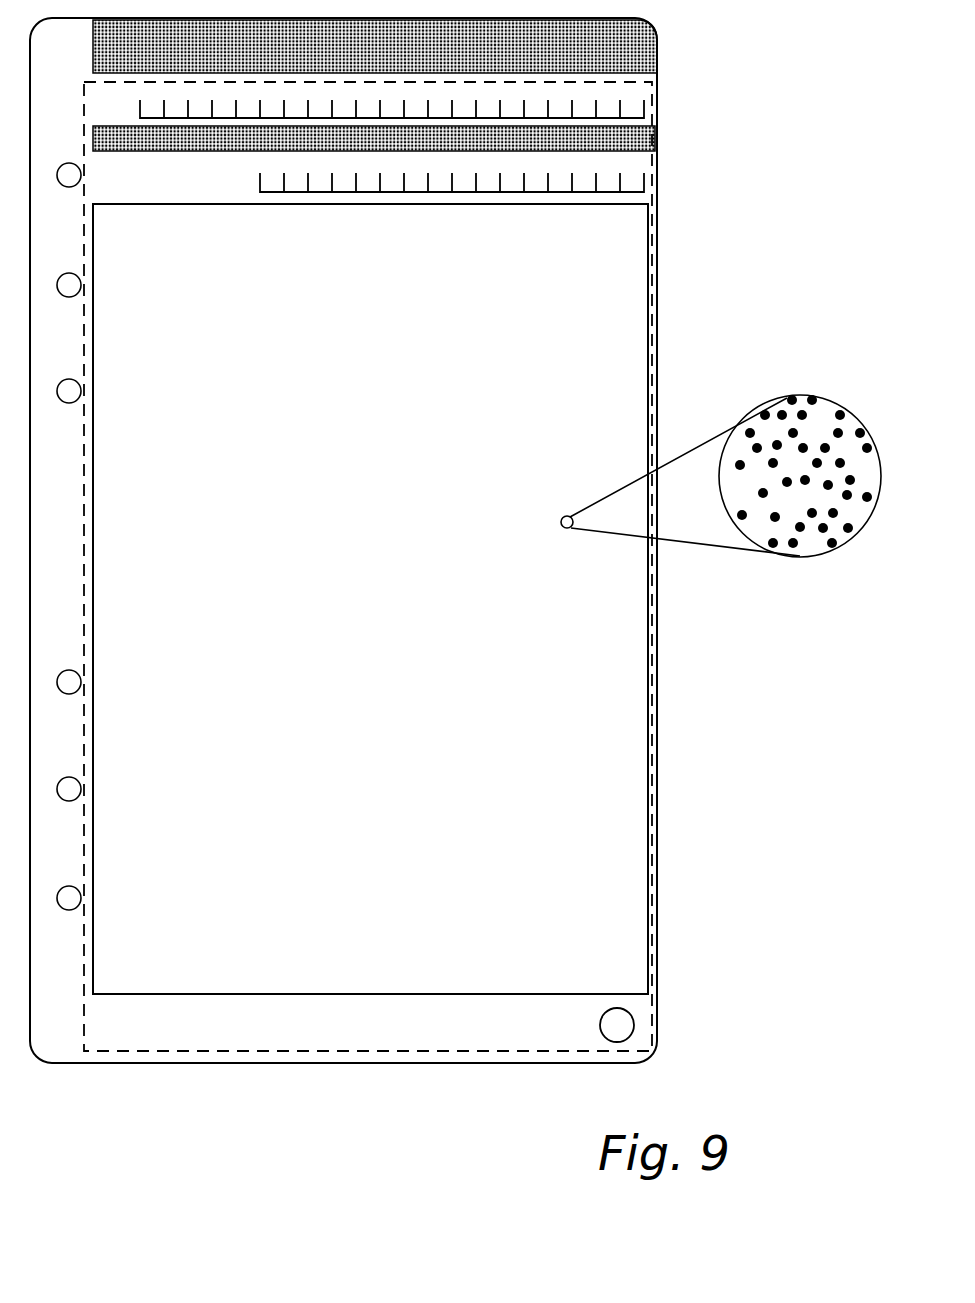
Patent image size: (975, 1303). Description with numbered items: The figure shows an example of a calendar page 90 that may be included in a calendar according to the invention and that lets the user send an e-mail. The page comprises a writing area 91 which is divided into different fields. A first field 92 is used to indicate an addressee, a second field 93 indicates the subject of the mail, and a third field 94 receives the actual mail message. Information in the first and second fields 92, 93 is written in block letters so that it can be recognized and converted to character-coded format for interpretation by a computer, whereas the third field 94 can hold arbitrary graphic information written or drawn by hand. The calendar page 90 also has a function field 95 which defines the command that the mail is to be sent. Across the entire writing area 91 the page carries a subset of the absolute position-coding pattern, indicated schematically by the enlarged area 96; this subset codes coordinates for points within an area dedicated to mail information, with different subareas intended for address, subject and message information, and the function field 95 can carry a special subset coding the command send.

The calendar page 90 is at (714, 277).
The writing area 91 is at (656, 744).
The first field 92 is at (641, 101).
The second field 93 is at (607, 173).
The third field 94 is at (370, 599).
The function field 95 is at (637, 1014).
The enlarged area 96 is at (820, 396).